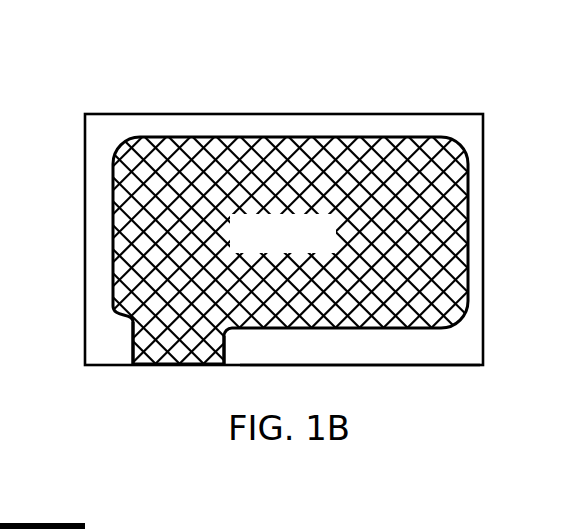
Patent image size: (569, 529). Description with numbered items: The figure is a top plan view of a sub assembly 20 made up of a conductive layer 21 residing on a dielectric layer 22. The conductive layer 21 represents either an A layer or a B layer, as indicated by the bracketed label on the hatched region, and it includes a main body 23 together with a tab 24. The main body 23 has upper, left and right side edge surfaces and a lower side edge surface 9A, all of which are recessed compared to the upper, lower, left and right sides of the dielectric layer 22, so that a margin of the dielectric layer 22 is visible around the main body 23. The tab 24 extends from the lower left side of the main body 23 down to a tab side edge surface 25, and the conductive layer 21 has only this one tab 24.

The sub assembly 20 is at (355, 70).
The conductive layer 21 is at (243, 182).
The dielectric layer 22 is at (413, 113).
The main body 23 is at (357, 250).
The tab 24 is at (200, 364).
The tab side edge surface 25 is at (168, 364).
The lower side edge surface 9A is at (333, 328).